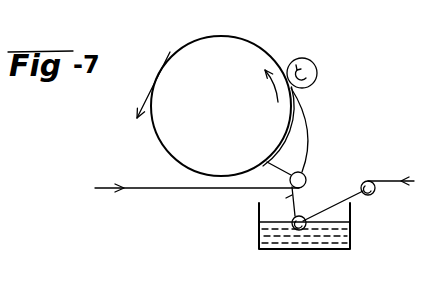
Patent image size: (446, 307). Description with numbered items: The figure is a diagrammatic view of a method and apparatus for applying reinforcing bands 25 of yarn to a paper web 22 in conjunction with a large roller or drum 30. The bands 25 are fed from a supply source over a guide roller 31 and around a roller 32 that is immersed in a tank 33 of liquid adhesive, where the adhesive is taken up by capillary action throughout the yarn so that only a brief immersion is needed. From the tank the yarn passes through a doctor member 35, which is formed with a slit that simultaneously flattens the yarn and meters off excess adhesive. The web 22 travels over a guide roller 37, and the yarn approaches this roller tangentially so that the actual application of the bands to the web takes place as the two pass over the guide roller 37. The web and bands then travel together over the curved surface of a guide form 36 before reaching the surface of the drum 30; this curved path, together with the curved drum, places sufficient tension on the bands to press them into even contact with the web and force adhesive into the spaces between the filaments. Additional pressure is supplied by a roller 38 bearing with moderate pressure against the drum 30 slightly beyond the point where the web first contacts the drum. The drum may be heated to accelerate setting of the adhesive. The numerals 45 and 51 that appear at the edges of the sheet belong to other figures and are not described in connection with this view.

The paper web 22 is at (158, 188).
The reinforcing bands 25 is at (385, 178).
The drum 30 is at (188, 55).
The guide roller 31 is at (373, 193).
The roller 32 is at (302, 230).
The tank 33 is at (280, 248).
The doctor member 35 is at (301, 190).
The guide form 36 is at (306, 122).
The guide roller 37 is at (301, 170).
The roller 38 is at (317, 71).
The reference numeral (adjacent figure) 45 is at (29, 6).
The reference numeral (adjacent figure) 51 is at (434, 37).